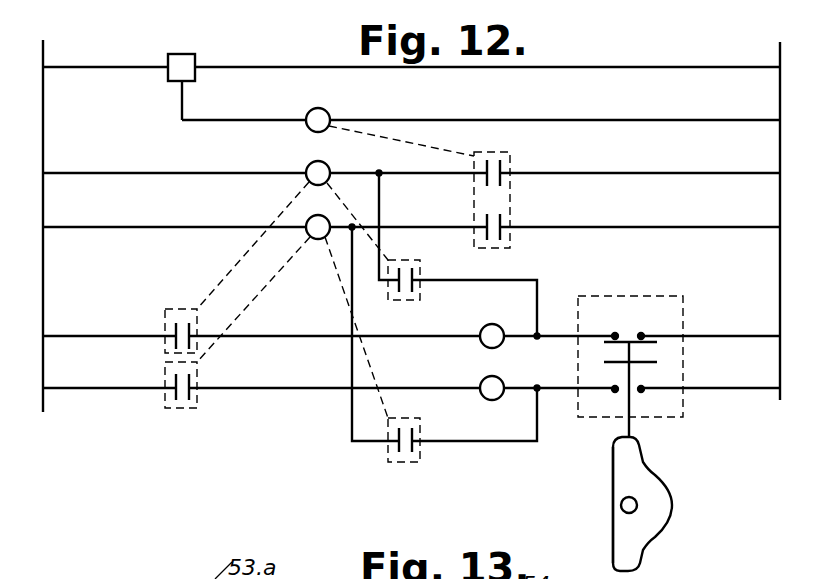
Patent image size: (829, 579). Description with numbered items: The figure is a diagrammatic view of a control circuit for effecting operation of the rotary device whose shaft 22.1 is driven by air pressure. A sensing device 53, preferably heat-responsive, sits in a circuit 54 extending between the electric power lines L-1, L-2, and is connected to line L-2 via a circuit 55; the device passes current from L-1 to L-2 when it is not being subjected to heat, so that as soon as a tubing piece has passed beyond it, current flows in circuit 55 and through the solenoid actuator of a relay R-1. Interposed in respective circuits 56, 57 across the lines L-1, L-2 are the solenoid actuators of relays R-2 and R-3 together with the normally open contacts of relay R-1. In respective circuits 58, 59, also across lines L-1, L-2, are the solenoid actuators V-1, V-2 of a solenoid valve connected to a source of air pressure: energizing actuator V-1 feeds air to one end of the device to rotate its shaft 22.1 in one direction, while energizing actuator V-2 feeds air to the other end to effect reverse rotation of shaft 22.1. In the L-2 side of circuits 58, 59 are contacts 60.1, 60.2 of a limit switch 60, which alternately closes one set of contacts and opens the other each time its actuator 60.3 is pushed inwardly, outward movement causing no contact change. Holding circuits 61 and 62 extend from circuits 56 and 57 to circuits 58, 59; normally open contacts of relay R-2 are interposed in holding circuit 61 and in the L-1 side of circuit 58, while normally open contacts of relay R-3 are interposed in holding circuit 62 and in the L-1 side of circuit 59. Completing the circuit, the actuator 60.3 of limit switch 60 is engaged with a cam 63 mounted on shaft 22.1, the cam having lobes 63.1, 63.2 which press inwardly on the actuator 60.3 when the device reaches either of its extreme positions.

The sensing device 53 is at (182, 60).
The circuit 54 is at (627, 67).
The circuit 55 is at (625, 105).
The circuit 56 is at (640, 173).
The circuit 57 is at (668, 212).
The circuit 58 is at (320, 337).
The circuit 59 is at (316, 390).
The limit switch 60 is at (671, 360).
The contacts 60.1 is at (626, 322).
The contacts 60.2 is at (640, 398).
The actuator 60.3 is at (633, 428).
The holding circuit 61 is at (550, 260).
The holding circuit 62 is at (498, 445).
The cam 63 is at (634, 508).
The lobe 63.1 is at (622, 448).
The lobe 63.2 is at (637, 555).
The shaft 22.1 is at (621, 505).
The relay R-1 is at (318, 114).
The relay R-2 is at (308, 167).
The relay R-3 is at (316, 240).
The solenoid actuator V-1 is at (497, 318).
The solenoid actuator V-2 is at (490, 406).
The electric power line L-1 is at (43, 118).
The electric power line L-2 is at (778, 97).